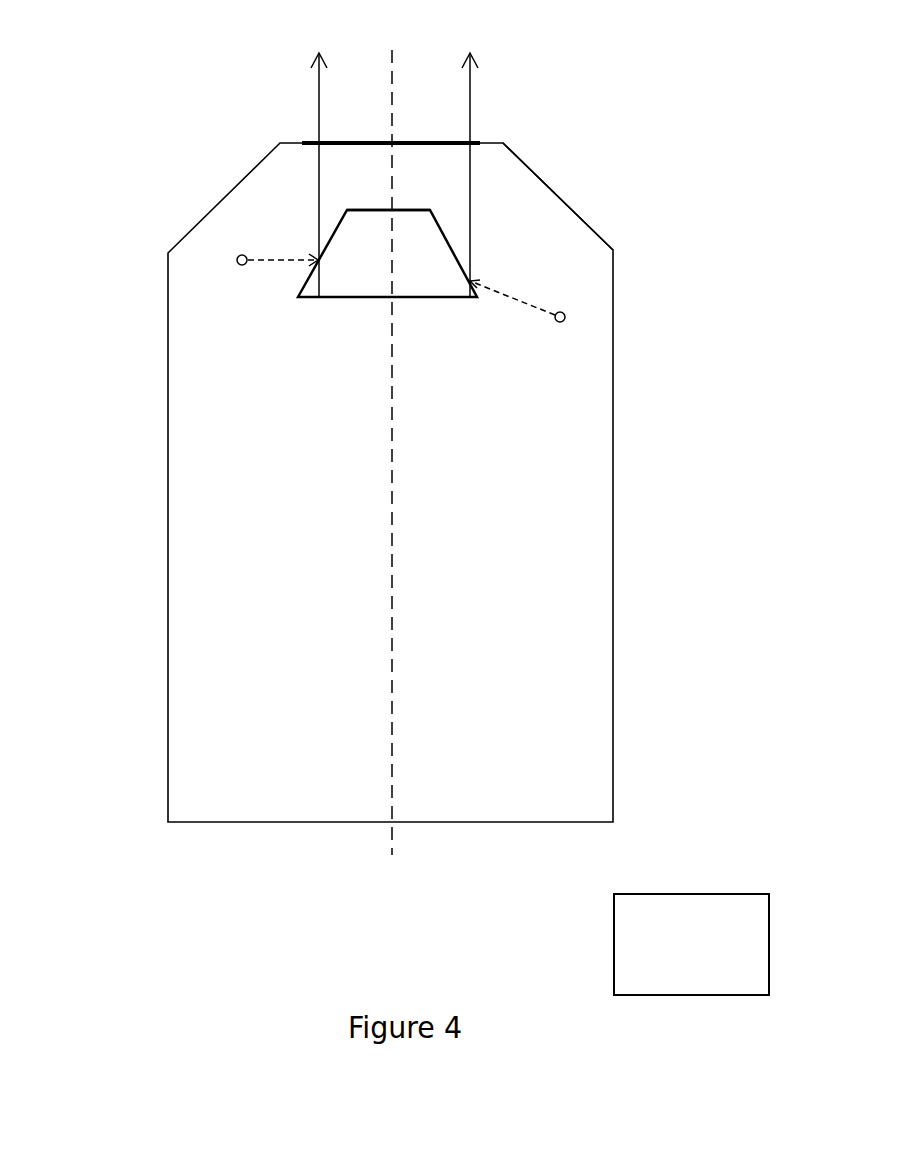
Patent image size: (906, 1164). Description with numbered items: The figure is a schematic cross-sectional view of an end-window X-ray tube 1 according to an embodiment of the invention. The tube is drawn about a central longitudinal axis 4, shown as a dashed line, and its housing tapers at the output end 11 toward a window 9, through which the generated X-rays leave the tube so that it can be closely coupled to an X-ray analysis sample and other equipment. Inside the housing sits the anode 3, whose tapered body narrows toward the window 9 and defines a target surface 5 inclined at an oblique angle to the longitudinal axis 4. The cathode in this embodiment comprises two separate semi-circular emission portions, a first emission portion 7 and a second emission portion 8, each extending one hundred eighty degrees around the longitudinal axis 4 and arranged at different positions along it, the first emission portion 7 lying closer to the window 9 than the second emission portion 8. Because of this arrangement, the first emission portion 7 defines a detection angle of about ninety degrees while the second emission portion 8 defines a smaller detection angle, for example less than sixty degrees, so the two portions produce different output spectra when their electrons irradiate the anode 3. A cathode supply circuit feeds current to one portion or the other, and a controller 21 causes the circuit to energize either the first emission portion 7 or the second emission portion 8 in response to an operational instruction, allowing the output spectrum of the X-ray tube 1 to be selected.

The X-ray tube 1 is at (145, 148).
The anode 3 is at (290, 299).
The central longitudinal axis 4 is at (392, 577).
The target surface 5 is at (442, 215).
The first emission portion 7 is at (241, 265).
The second emission portion 8 is at (565, 317).
The window 9 is at (313, 141).
The output end 11 is at (612, 213).
The controller 21 is at (613, 946).